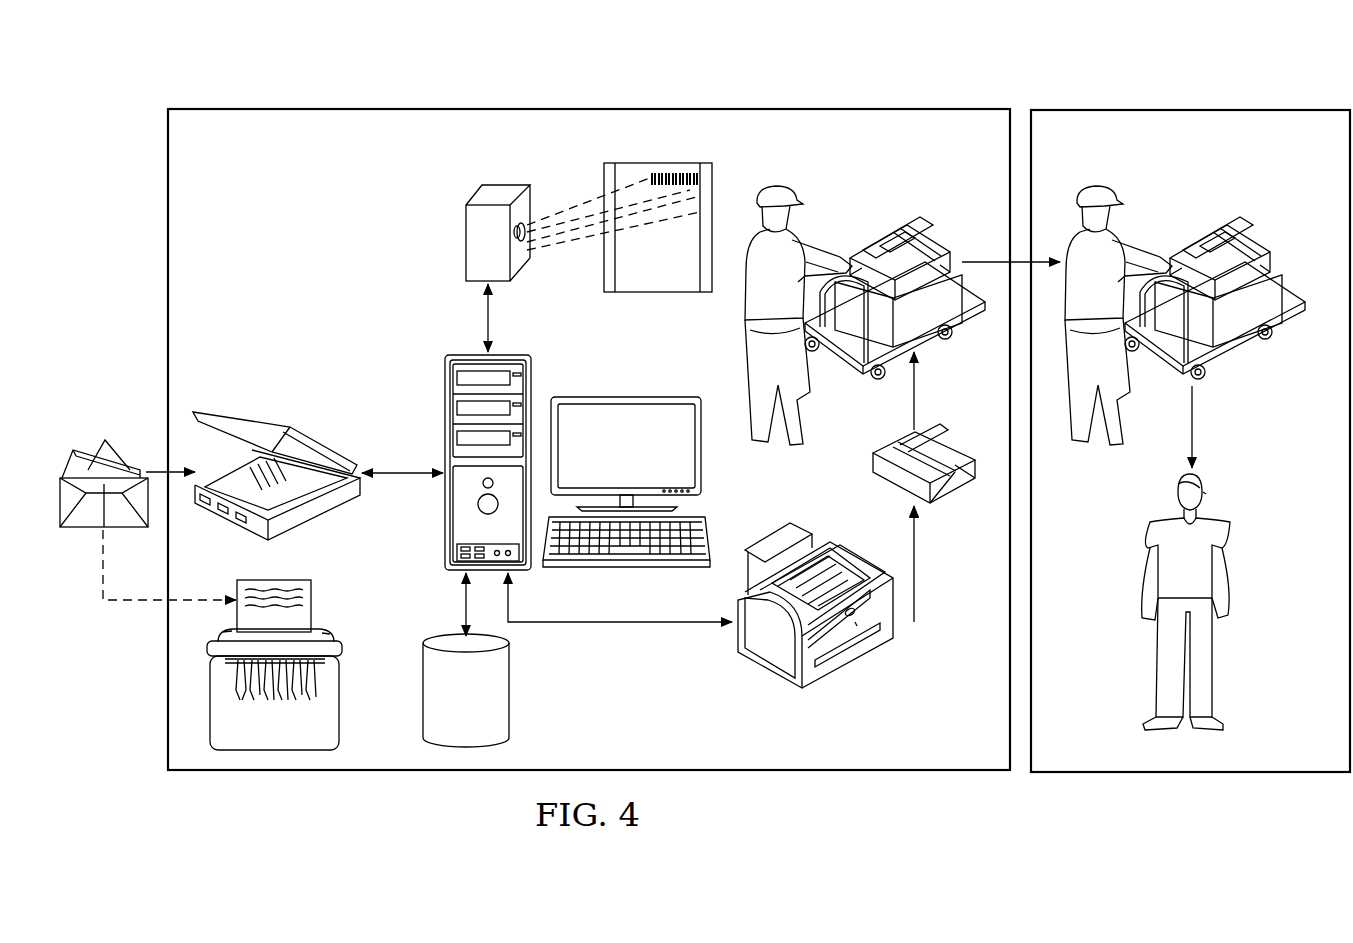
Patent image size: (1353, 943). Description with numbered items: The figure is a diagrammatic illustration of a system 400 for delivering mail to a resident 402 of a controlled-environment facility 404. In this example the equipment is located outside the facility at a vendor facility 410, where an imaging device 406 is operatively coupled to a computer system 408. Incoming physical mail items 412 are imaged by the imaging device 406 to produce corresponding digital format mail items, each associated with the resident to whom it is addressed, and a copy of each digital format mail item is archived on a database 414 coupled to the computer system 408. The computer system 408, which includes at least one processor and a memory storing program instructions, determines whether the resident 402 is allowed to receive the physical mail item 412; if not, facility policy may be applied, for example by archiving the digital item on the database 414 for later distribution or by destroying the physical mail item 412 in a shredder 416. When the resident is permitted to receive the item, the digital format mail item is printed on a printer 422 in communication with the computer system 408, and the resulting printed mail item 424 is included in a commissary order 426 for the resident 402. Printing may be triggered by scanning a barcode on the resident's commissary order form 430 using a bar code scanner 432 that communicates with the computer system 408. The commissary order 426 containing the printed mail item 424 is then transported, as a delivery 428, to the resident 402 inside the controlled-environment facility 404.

The system 400 is at (186, 76).
The resident 402 is at (1237, 592).
The controlled-environment facility 404 is at (1259, 106).
The imaging device 406 is at (243, 418).
The computer system 408 is at (441, 405).
The vendor facility 410 is at (368, 106).
The physical mail items 412 is at (64, 478).
The database 414 is at (487, 711).
The shredder 416 is at (340, 697).
The printer 422 is at (767, 670).
The printed mail item 424 is at (845, 580).
The commissary order 426 is at (950, 500).
The delivery 428 is at (866, 238).
The commissary order form 430 is at (678, 253).
The bar code scanner 432 is at (466, 243).